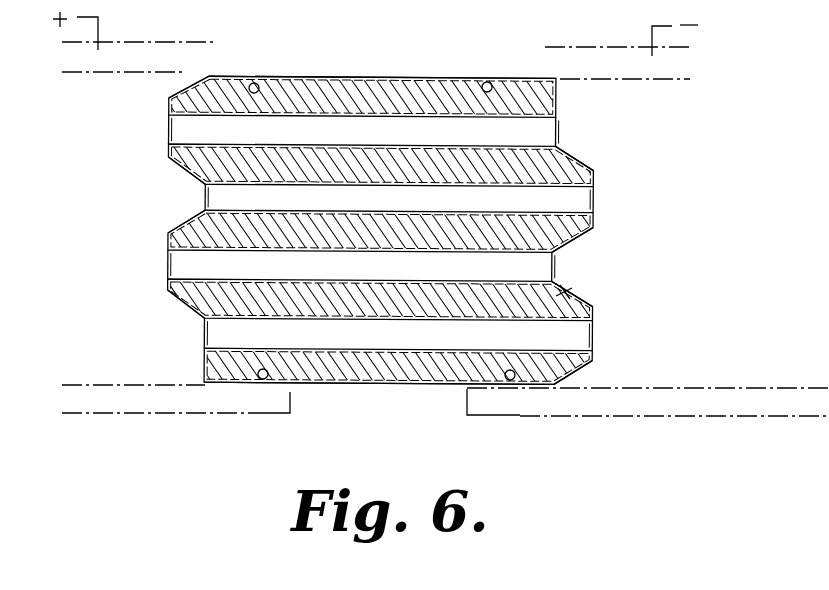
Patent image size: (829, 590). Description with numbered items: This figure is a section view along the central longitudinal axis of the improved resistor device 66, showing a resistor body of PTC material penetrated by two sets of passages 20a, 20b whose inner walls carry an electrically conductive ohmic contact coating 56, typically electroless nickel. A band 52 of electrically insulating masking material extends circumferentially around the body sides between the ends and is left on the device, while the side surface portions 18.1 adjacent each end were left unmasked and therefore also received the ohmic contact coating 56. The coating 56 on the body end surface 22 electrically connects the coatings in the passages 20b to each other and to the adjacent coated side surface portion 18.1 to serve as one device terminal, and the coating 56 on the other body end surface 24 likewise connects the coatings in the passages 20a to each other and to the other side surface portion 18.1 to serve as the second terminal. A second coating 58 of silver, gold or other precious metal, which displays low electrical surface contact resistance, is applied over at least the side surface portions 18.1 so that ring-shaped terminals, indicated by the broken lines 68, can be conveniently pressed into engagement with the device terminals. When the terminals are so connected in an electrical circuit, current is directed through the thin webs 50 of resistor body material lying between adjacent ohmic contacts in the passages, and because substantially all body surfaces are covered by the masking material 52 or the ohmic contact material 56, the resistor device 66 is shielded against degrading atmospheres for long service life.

The unmasked side surface portion 18.1 is at (255, 83).
The body passages 20a is at (535, 132).
The body passages 20b is at (190, 203).
The body end surface 22 is at (197, 362).
The body end surface 24 is at (562, 292).
The thin webs 50 is at (418, 160).
The band of masking material 52 is at (338, 77).
The electrically conductive ohmic contact coating 56 is at (168, 92).
The second coating 58 is at (186, 88).
The resistor device 66 is at (386, 396).
The ring-shaped terminals 68 is at (90, 73).